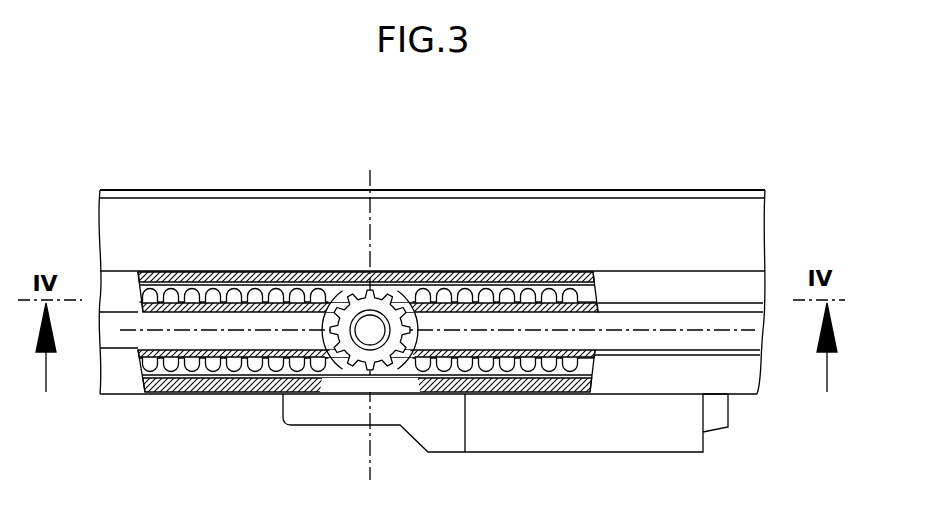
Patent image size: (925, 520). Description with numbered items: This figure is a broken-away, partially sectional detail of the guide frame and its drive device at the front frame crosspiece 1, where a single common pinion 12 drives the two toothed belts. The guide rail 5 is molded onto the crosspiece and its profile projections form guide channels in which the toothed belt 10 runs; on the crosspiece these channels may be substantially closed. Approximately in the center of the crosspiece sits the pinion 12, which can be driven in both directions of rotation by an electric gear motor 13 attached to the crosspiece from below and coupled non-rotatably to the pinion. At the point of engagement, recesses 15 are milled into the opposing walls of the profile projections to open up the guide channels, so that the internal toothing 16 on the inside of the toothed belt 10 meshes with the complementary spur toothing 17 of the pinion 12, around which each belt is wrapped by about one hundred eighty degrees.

The front frame crosspiece 1 is at (153, 203).
The guide rail 5 is at (212, 272).
The toothed belt 10 is at (182, 393).
The pinion 12 is at (414, 307).
The electric gear motor 13 is at (555, 420).
The recesses 15 is at (434, 300).
The internal toothing 16 is at (193, 292).
The toothing 17 is at (305, 303).